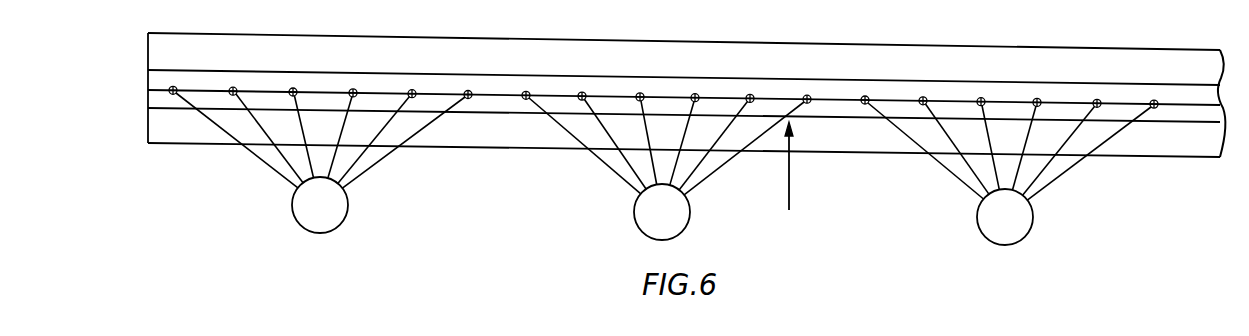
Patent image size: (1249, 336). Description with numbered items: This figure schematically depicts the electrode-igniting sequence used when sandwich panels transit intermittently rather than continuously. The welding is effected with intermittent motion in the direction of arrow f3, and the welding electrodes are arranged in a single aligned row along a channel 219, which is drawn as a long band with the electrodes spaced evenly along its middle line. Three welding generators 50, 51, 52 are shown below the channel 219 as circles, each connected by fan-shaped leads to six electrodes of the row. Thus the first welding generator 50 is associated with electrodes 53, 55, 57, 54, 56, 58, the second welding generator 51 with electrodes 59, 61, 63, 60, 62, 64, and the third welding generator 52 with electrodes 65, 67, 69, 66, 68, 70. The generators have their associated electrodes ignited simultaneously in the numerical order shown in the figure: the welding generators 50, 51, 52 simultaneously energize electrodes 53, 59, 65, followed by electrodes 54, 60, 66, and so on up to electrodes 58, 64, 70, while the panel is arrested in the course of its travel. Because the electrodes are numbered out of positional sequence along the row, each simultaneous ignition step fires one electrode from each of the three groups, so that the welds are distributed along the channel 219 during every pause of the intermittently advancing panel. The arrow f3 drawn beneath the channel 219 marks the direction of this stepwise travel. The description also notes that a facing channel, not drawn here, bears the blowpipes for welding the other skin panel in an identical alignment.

The channel 219 is at (490, 162).
The welding generator 50 is at (320, 205).
The welding generator 51 is at (662, 212).
The welding generator 52 is at (1005, 217).
The welding electrode 53 is at (173, 86).
The welding electrode 54 is at (353, 89).
The welding electrode 55 is at (233, 87).
The welding electrode 56 is at (412, 90).
The welding electrode 57 is at (293, 88).
The welding electrode 58 is at (468, 91).
The welding electrode 59 is at (526, 91).
The welding electrode 60 is at (695, 94).
The welding electrode 61 is at (582, 92).
The welding electrode 62 is at (750, 94).
The welding electrode 63 is at (640, 93).
The welding electrode 64 is at (807, 95).
The welding electrode 65 is at (865, 96).
The welding electrode 66 is at (1037, 98).
The welding electrode 67 is at (923, 97).
The welding electrode 68 is at (1097, 99).
The welding electrode 69 is at (981, 98).
The welding electrode 70 is at (1154, 100).
The arrow f3 is at (789, 169).